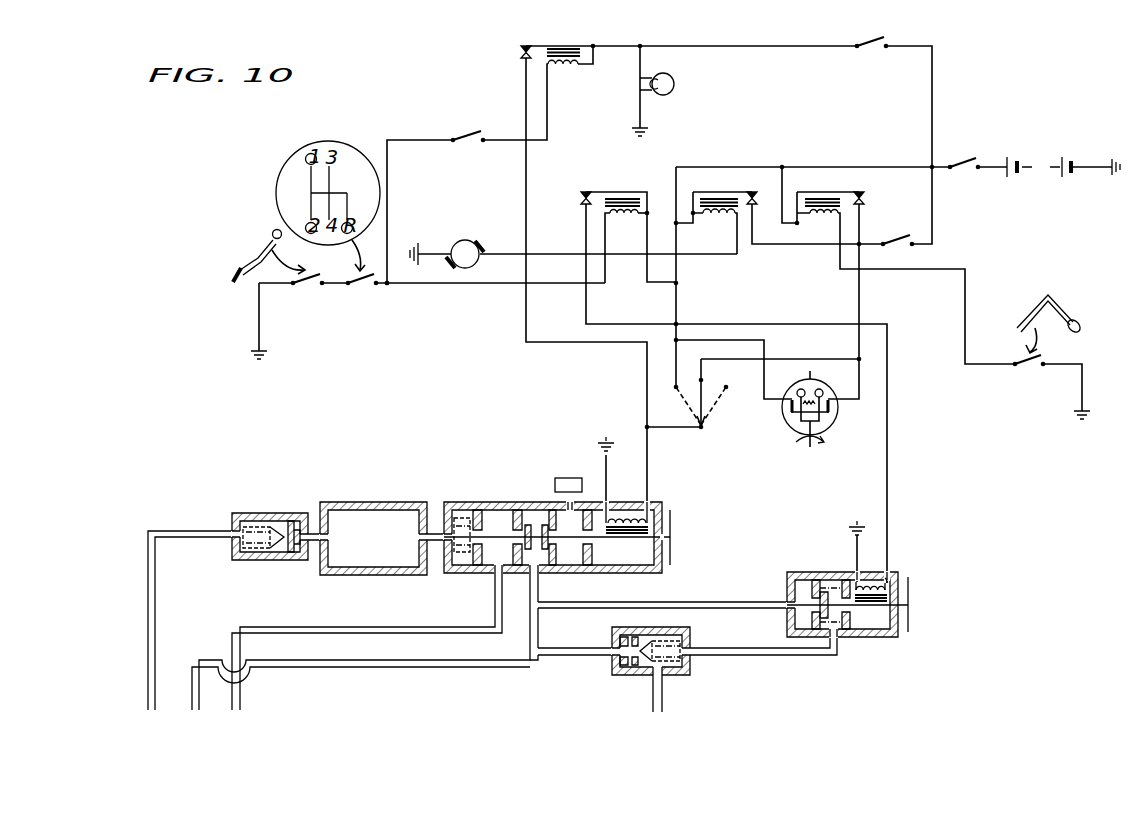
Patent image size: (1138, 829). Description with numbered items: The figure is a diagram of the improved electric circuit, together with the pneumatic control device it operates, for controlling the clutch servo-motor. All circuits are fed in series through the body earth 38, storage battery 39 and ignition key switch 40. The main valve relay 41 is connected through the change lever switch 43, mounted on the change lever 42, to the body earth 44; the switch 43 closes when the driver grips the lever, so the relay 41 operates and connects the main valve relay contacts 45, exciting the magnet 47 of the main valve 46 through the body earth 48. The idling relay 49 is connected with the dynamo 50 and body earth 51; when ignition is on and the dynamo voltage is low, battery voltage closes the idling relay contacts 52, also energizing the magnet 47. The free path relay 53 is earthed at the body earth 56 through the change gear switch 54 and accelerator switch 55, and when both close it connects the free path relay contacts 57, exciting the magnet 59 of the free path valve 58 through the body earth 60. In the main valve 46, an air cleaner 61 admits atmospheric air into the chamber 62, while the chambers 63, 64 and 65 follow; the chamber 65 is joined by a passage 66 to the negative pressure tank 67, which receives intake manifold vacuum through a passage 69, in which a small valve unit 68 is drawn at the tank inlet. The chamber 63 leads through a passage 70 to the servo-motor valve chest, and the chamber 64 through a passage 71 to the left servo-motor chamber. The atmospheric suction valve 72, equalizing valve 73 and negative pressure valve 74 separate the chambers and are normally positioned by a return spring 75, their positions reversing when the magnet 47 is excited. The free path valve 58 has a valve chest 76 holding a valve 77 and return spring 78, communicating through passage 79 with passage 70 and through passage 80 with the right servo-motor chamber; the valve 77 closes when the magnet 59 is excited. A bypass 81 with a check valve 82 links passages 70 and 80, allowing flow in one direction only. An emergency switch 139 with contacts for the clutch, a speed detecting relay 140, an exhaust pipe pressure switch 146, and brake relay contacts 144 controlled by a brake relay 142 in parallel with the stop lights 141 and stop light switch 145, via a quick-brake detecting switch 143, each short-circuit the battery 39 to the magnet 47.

The body earth 38 is at (1117, 181).
The storage battery 39 is at (1041, 165).
The ignition key switch 40 is at (966, 162).
The main valve relay 41 is at (820, 216).
The change lever 42 is at (1069, 307).
The change lever switch 43 is at (1031, 372).
The body earth 44 is at (1070, 422).
The main valve relay contacts 45 is at (866, 197).
The main valve 46 is at (658, 502).
The magnet of the main valve 47 is at (632, 510).
The body earth 48 is at (612, 443).
The idling relay 49 is at (716, 220).
The dynamo 50 is at (462, 238).
The body earth 51 is at (414, 241).
The idling relay contacts 52 is at (757, 188).
The free path relay 53 is at (626, 218).
The change gear switch 54 is at (364, 288).
The accelerator switch 55 is at (308, 288).
The body earth 56 is at (253, 356).
The free path relay contacts 57 is at (583, 197).
The free path valve 58 is at (886, 638).
The magnet 59 is at (880, 576).
The body earth 60 is at (852, 528).
The air cleaner 61 is at (568, 478).
The chamber 62 is at (570, 561).
The chamber 63 is at (530, 561).
The chamber 64 is at (490, 561).
The chamber 65 is at (460, 561).
The passage 66 is at (429, 530).
The negative pressure tank 67 is at (355, 502).
The check valve 68 is at (272, 512).
The passage 69 is at (205, 538).
The passage 70 is at (393, 668).
The passage 71 is at (397, 627).
The atmospheric suction valve 72 is at (546, 524).
The equalizing valve 73 is at (527, 524).
The negative pressure valve 74 is at (478, 510).
The return spring 75 is at (459, 515).
The valve chest 76 is at (835, 619).
The valve 77 is at (812, 600).
The return spring 78 is at (829, 579).
The passage 79 is at (726, 601).
The passage 80 is at (664, 683).
The bypass 81 is at (566, 656).
The check valve 82 is at (610, 633).
The emergency switch 139 is at (715, 412).
The speed detecting relay 140 is at (787, 420).
The stop lights 141 is at (674, 84).
The brake relay 142 is at (580, 70).
The quick-brake detecting switch 143 is at (468, 137).
The brake relay contacts 144 is at (512, 53).
The stop light switch 145 is at (872, 51).
The exhaust pipe pressure switch 146 is at (901, 237).